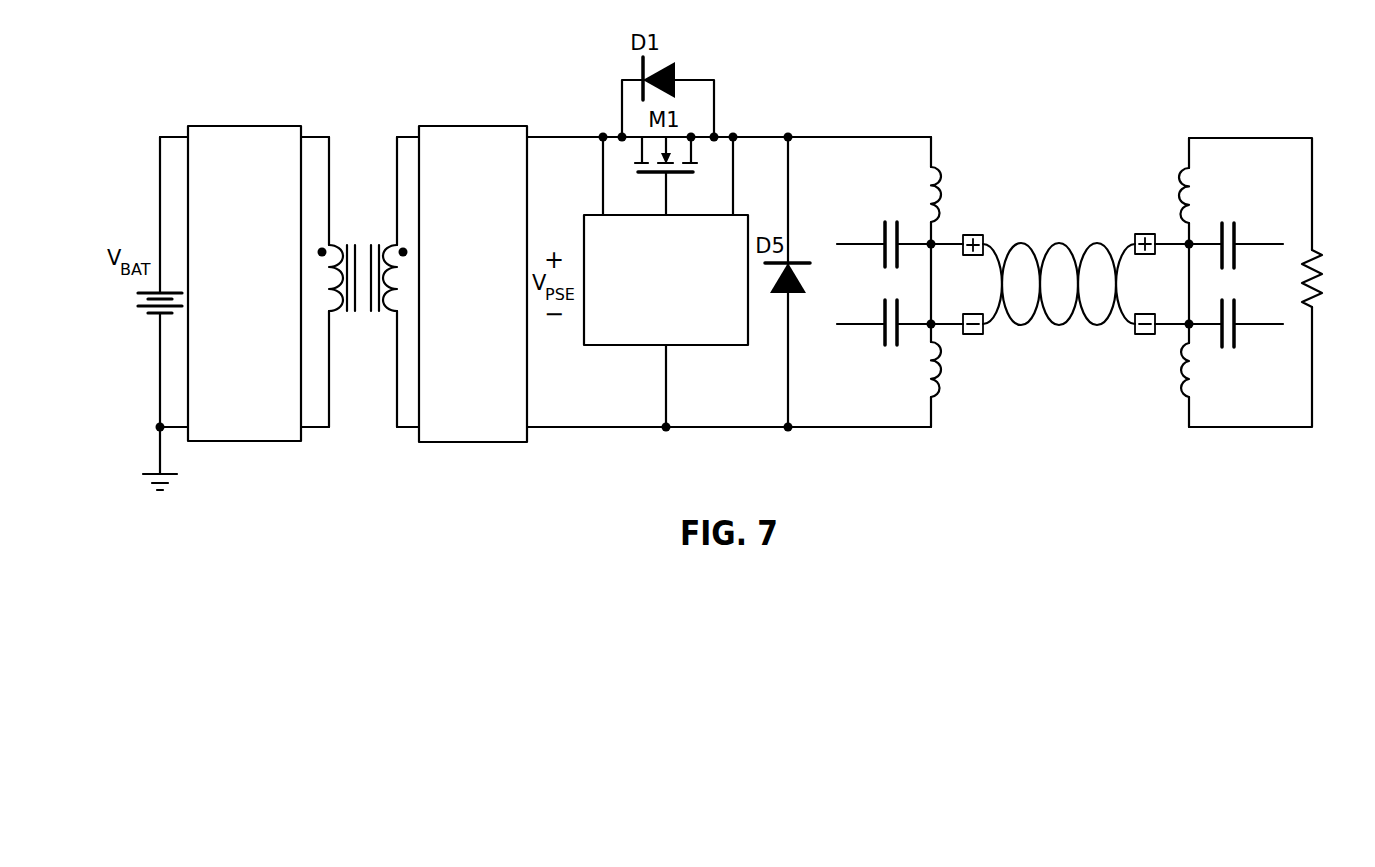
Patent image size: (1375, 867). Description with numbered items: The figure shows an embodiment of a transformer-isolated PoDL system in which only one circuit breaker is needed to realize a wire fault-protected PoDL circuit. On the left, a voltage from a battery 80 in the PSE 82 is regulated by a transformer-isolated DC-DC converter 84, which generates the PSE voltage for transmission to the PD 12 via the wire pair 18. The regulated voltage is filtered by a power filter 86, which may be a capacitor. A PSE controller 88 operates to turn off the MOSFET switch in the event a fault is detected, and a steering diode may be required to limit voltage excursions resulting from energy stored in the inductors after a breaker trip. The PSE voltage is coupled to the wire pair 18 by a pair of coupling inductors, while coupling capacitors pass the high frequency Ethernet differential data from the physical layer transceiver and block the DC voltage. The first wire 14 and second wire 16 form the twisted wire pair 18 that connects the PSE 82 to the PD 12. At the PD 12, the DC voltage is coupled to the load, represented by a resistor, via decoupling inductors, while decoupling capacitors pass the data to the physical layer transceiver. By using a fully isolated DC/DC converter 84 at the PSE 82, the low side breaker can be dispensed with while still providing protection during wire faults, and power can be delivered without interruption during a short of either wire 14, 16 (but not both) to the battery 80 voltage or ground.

The PD 12 is at (1194, 125).
The first wire 14 is at (989, 246).
The second wire 16 is at (989, 327).
The twisted wire pair 18 is at (1059, 265).
The battery 80 is at (146, 316).
The PSE 82 is at (896, 104).
The transformer-isolated DC-DC converter 84 is at (242, 126).
The power filter 86 is at (454, 126).
The PSE controller 88 is at (715, 345).